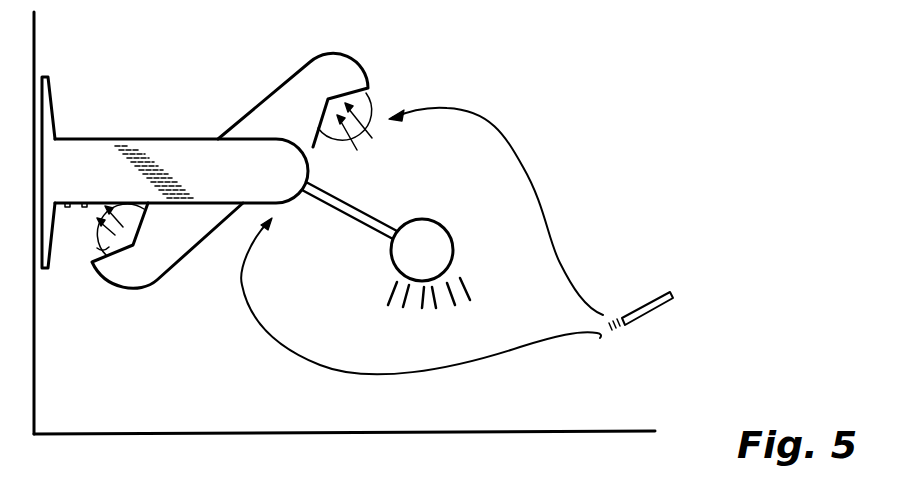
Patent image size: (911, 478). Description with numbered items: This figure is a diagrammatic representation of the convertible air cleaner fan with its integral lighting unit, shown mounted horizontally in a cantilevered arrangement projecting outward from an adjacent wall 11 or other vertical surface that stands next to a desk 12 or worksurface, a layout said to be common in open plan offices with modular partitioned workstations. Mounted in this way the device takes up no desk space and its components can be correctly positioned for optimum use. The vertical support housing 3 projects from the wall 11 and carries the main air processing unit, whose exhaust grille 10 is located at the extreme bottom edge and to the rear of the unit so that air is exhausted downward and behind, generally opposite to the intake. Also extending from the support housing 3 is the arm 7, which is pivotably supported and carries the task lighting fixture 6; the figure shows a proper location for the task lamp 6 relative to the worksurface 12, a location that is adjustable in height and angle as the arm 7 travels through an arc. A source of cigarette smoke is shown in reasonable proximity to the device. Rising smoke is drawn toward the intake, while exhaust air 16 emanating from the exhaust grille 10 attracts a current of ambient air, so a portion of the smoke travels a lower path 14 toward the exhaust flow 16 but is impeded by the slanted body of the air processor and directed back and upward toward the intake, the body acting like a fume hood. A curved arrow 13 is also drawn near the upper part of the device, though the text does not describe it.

The vertical support housing 3 is at (87, 157).
The task lighting fixture 6 is at (430, 246).
The arm 7 is at (357, 213).
The exhaust grille 10 is at (98, 245).
The wall 11 is at (37, 398).
The desk 12 is at (278, 432).
The motion arrow 13 is at (550, 228).
The lower path 14 is at (290, 356).
The exhaust air 16 is at (97, 221).